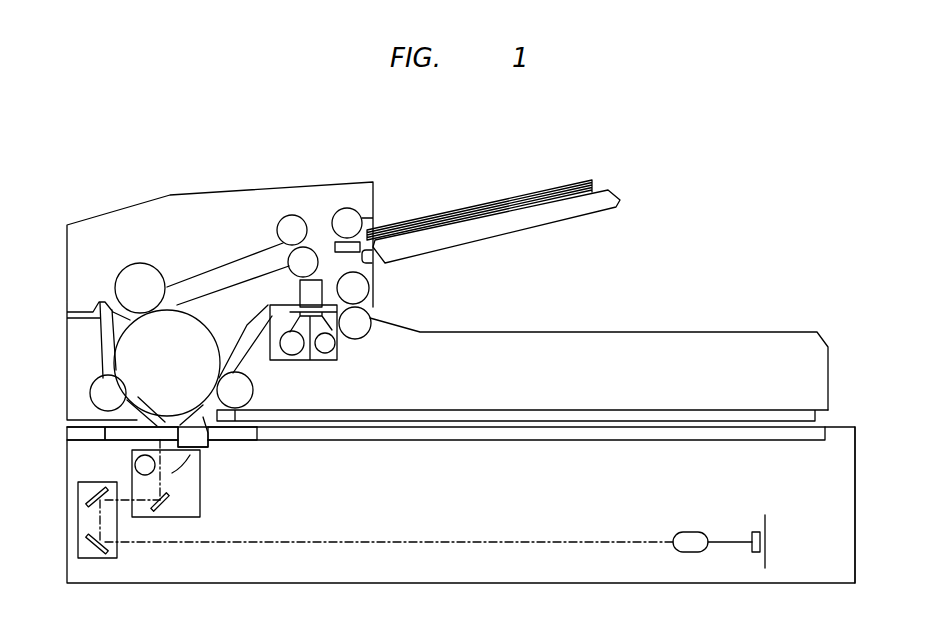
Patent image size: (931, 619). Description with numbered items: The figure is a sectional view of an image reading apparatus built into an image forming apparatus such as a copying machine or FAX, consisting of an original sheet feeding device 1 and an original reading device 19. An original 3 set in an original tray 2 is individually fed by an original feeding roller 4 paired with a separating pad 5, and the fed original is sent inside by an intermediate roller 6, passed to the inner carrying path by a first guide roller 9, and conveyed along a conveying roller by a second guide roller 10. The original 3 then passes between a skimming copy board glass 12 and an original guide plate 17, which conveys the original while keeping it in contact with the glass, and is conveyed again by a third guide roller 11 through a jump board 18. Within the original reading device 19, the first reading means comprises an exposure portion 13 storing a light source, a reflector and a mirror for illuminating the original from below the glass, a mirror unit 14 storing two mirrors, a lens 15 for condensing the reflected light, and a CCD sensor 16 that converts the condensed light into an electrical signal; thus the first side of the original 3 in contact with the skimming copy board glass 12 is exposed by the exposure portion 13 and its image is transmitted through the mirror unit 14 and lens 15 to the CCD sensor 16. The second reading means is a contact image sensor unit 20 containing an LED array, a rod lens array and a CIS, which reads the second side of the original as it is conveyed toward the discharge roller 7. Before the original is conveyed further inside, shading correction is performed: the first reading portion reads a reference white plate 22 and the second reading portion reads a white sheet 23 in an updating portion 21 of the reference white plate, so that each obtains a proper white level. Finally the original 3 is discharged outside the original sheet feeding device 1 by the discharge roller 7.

The original sheet feeding device 1 is at (768, 332).
The original tray 2 is at (550, 222).
The original 3 is at (528, 188).
The original feeding roller 4 is at (335, 216).
The separating pad 5 is at (375, 268).
The intermediate roller 6 is at (280, 226).
The discharge roller 7 is at (372, 333).
The first guide roller 9 is at (122, 270).
The second guide roller 10 is at (100, 380).
The third guide roller 11 is at (253, 398).
The skimming copy board glass 12 is at (113, 440).
The exposure portion 13 is at (200, 505).
The mirror unit 14 is at (117, 548).
The lens 15 is at (688, 531).
The CCD sensor 16 is at (752, 532).
The original guide plate 17 is at (163, 417).
The jump board 18 is at (197, 442).
The original reading device 19 is at (840, 427).
The contact image sensor unit 20 is at (300, 291).
The updating portion of the reference white plate 21 is at (332, 360).
The reference white plate 22 is at (236, 433).
The white sheet 23 is at (298, 360).